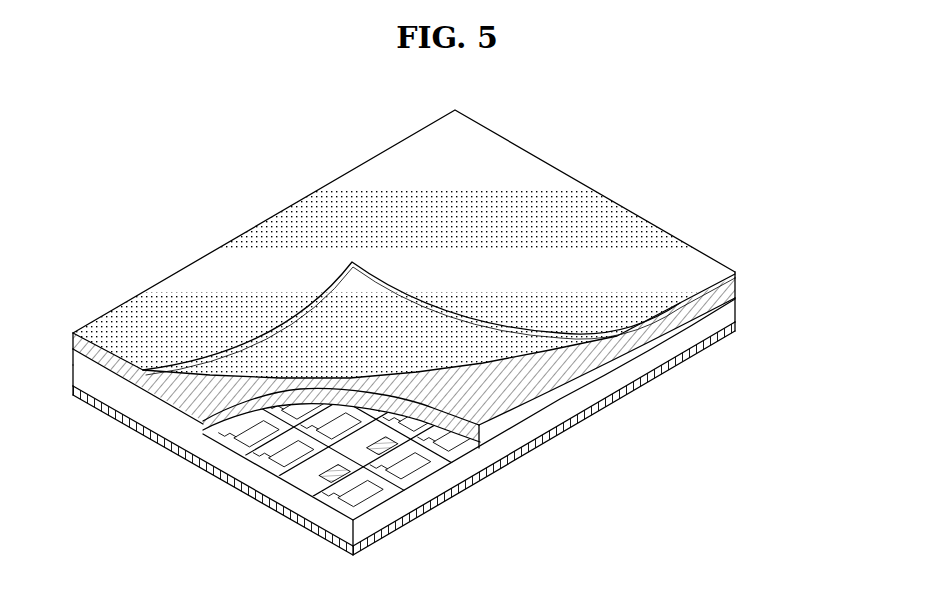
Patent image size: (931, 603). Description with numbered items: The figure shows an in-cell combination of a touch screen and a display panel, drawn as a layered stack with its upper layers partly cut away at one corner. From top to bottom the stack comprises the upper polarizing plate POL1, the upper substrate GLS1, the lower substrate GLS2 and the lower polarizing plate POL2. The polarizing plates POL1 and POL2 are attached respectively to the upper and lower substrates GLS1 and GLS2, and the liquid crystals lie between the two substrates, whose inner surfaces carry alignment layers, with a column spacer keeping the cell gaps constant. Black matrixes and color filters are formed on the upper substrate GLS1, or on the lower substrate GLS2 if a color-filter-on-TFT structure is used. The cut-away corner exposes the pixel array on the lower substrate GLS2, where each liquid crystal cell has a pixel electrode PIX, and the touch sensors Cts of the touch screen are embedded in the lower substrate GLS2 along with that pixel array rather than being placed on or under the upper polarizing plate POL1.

The upper polarizing plate POL1 is at (738, 272).
The upper substrate GLS1 is at (740, 290).
The lower substrate GLS2 is at (740, 312).
The lower polarizing plate POL2 is at (738, 334).
The touch sensors Cts is at (333, 479).
The pixel electrode PIX is at (357, 497).